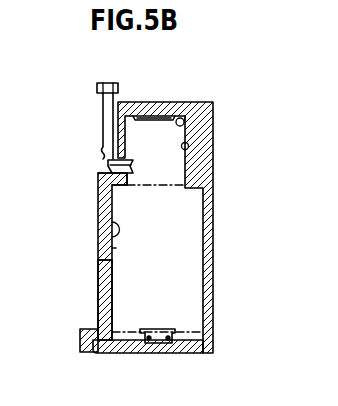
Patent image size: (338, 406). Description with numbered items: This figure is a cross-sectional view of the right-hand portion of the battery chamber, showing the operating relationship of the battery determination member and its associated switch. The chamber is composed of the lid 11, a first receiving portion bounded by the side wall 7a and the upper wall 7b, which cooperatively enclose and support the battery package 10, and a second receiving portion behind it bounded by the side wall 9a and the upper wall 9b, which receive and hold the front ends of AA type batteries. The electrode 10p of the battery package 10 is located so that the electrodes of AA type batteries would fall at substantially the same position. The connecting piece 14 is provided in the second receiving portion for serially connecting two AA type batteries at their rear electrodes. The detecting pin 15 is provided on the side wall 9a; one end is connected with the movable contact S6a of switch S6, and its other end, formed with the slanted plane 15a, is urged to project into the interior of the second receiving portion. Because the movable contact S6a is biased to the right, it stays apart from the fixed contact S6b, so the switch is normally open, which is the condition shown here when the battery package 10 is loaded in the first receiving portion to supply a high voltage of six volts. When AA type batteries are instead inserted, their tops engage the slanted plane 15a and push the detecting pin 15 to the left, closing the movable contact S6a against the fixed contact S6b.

The battery package 10 is at (215, 253).
The electrode of battery package 10p is at (188, 356).
The lid 11 is at (132, 353).
The connecting piece 14 is at (185, 116).
The detecting pin 15 is at (107, 163).
The slanted plane 15a is at (133, 168).
The side wall 7a is at (105, 247).
The upper wall 7b is at (105, 200).
The side wall 9a is at (188, 144).
The upper wall 9b is at (187, 119).
The movable contact S6a is at (102, 128).
The fixed contact S6b is at (103, 108).